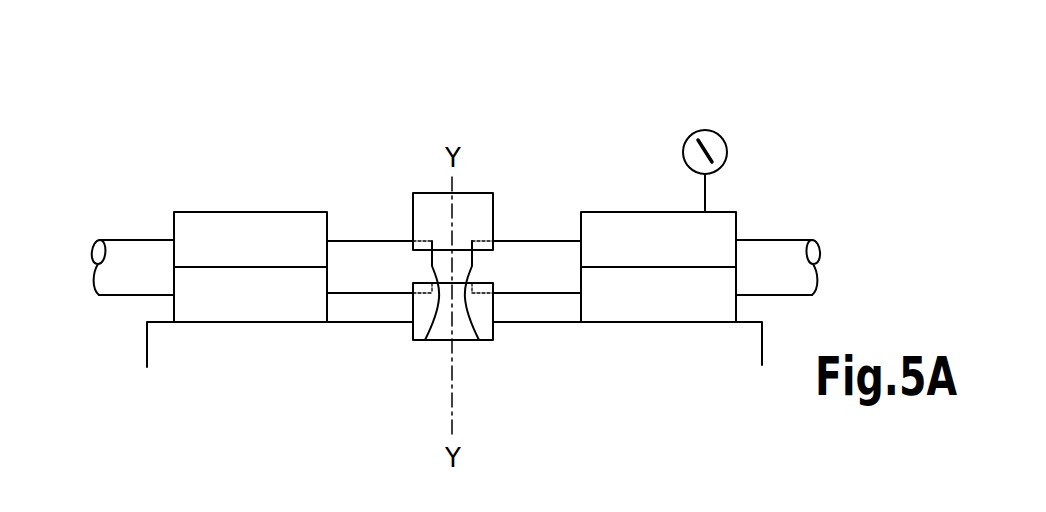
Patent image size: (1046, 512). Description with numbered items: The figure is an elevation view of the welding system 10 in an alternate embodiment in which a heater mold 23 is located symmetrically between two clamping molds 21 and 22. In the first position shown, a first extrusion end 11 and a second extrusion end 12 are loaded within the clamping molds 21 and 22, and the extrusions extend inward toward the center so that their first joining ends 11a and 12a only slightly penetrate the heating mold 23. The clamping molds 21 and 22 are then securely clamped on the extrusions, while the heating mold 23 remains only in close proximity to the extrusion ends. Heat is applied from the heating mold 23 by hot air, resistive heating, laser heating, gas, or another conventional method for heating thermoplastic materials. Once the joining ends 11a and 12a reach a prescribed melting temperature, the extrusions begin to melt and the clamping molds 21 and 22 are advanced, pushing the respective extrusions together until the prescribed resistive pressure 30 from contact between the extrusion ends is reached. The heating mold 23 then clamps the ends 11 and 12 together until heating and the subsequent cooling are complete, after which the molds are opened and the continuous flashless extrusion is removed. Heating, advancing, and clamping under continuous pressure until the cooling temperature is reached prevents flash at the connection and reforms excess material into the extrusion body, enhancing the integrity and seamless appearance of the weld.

The fluid coupling assembly 10 is at (268, 100).
The first extrusion end 11 is at (757, 238).
The first joining end 11a is at (480, 339).
The second extrusion end 12 is at (137, 240).
The second joining end 12a is at (426, 339).
The clamping mold 21 is at (595, 208).
The clamping mold 22 is at (262, 212).
The heating mold 23 is at (445, 270).
The prescribed resistive pressure 30 is at (715, 132).